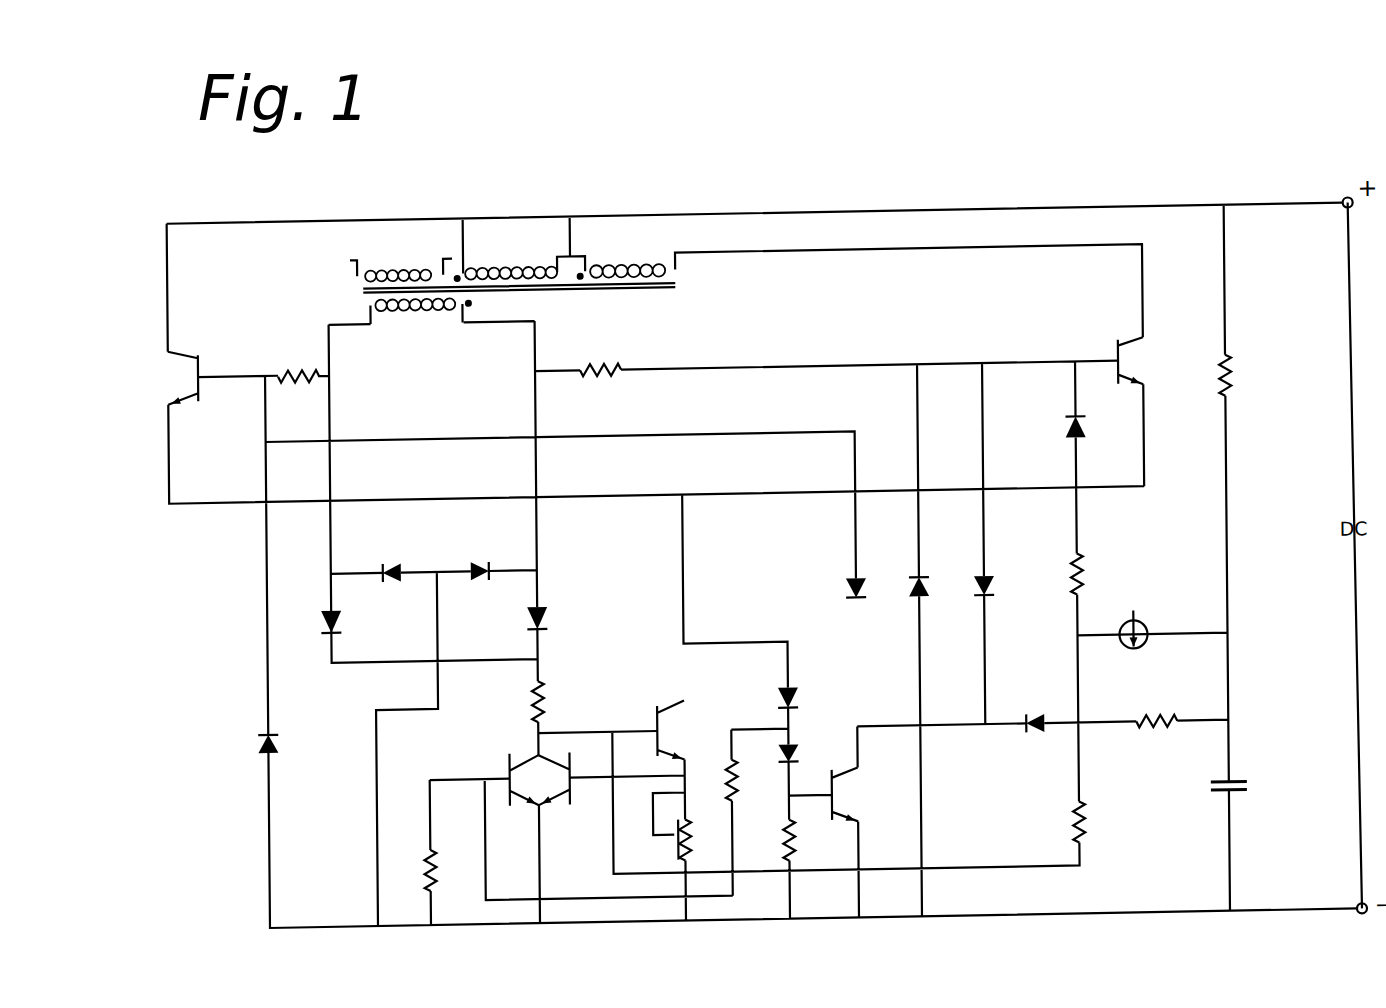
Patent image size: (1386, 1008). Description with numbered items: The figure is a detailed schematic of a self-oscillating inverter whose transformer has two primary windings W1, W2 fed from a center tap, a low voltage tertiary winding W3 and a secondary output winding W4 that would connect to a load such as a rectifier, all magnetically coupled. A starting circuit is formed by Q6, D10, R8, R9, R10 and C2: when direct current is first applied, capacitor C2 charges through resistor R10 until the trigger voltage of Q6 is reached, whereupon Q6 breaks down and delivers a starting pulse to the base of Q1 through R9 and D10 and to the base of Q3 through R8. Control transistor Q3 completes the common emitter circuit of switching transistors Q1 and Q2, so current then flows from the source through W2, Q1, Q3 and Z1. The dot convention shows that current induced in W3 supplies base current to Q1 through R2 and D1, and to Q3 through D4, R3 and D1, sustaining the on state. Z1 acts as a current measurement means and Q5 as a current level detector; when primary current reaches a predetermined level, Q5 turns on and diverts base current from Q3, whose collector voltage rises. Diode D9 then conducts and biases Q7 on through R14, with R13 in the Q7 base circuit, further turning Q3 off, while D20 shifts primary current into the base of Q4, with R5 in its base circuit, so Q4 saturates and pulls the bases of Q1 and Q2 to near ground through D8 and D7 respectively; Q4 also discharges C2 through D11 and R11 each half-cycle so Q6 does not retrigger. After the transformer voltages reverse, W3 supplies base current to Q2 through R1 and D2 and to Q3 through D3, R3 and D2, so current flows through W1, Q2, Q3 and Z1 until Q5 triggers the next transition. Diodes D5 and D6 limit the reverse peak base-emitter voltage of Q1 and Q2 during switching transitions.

The primary winding W1 is at (505, 262).
The primary winding W2 is at (620, 260).
The tertiary winding W3 is at (421, 316).
The secondary output winding W4 is at (401, 253).
The switching transistor Q1 is at (1136, 361).
The switching transistor Q2 is at (178, 378).
The control transistor Q3 is at (673, 730).
The transistor Q4 is at (829, 794).
The transistor Q5 is at (569, 777).
The trigger device Q6 is at (1151, 622).
The transistor Q7 is at (508, 779).
The resistor R1 is at (298, 364).
The resistor R2 is at (600, 359).
The resistor R3 is at (552, 702).
The resistor R5 is at (803, 840).
The resistor R8 is at (1094, 822).
The resistor R9 is at (1091, 574).
The resistor R10 is at (1244, 375).
The resistor R11 is at (1156, 734).
The resistor R13 is at (449, 870).
The resistor R14 is at (751, 780).
The current measurement means Z1 is at (697, 840).
The capacitor C2 is at (1239, 774).
The diode D1 is at (386, 559).
The diode D2 is at (475, 557).
The diode D3 is at (347, 622).
The diode D4 is at (553, 618).
The diode D5 is at (255, 743).
The diode D6 is at (930, 576).
The diode D7 is at (866, 575).
The diode D8 is at (995, 574).
The diode D9 is at (804, 696).
The diode D10 is at (1055, 427).
The diode D11 is at (1034, 736).
The diode D20 is at (811, 749).